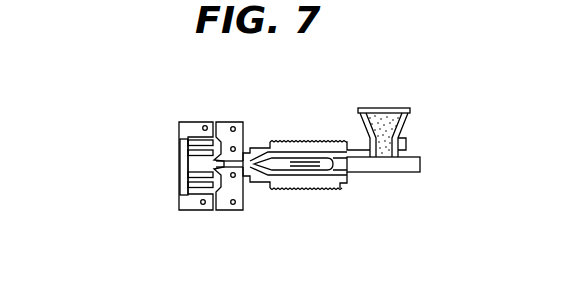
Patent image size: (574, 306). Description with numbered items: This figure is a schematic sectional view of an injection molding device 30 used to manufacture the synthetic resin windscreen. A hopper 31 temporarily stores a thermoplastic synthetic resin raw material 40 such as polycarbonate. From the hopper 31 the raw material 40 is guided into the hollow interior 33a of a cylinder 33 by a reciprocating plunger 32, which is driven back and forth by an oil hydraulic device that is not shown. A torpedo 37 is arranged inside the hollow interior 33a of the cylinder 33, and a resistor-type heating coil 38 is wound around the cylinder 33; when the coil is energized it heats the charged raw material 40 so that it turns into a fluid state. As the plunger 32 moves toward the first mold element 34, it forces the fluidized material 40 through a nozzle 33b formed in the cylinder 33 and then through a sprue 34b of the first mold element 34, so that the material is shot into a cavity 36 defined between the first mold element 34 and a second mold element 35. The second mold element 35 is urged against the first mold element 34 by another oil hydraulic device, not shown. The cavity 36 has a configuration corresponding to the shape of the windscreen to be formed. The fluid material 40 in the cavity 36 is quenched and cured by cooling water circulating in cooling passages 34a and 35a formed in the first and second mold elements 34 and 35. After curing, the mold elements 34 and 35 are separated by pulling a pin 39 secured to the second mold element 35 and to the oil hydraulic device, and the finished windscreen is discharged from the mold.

The injection molding device 30 is at (150, 130).
The hopper 31 is at (411, 112).
The reciprocating plunger 32 is at (381, 171).
The cylinder 33 is at (331, 142).
The hollow interior 33a is at (341, 187).
The nozzle 33b is at (253, 184).
The first mold element 34 is at (243, 125).
The cooling passage 34a is at (231, 205).
The sprue 34b is at (251, 150).
The second mold element 35 is at (194, 122).
The cooling passage 35a is at (203, 205).
The cavity 36 is at (223, 122).
The torpedo 37 is at (306, 168).
The resistor-type heating coil 38 is at (294, 142).
The pin 39 is at (180, 166).
The thermoplastic synthetic resin raw material 40 is at (399, 122).